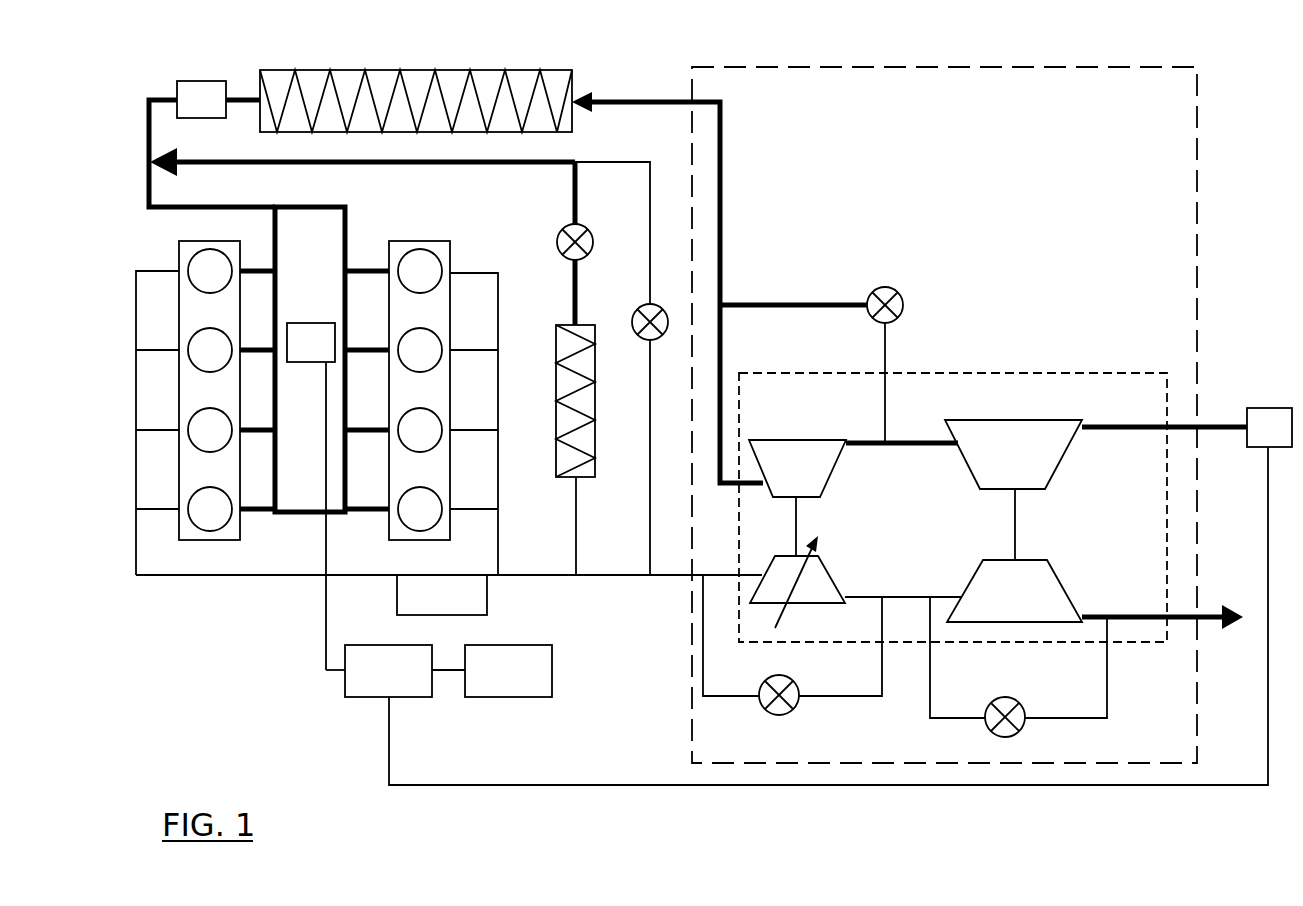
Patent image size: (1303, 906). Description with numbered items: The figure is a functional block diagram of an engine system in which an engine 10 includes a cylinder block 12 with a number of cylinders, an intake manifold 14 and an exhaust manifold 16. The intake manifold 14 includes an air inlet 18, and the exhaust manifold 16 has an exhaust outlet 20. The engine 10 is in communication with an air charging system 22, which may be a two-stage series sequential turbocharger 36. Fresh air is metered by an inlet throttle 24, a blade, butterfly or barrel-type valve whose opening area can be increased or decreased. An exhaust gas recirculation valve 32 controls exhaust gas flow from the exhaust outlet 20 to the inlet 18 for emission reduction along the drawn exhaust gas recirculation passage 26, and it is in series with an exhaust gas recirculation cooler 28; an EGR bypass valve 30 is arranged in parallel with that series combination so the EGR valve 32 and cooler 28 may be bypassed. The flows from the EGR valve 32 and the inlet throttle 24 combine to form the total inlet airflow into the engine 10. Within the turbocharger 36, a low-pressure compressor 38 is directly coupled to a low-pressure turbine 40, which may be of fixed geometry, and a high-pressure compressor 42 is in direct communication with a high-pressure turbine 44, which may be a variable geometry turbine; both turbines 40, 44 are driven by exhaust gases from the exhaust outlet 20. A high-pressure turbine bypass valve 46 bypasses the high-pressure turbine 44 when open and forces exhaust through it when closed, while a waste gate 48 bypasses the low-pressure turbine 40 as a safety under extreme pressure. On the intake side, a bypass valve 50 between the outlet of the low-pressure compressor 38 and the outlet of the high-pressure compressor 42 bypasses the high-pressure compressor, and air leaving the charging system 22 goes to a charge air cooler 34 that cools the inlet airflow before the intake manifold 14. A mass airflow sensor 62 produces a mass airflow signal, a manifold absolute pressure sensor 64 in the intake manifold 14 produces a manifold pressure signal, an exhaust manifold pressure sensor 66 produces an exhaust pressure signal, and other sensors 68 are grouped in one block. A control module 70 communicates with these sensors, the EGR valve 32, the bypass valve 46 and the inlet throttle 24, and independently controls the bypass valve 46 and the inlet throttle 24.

The engine 10 is at (166, 598).
The cylinder block 12 is at (179, 247).
The intake manifold 14 is at (325, 207).
The exhaust manifold 16 is at (136, 298).
The air inlet 18 is at (207, 207).
The exhaust outlet 20 is at (539, 576).
The air charging system 22 is at (930, 67).
The inlet throttle 24 is at (202, 81).
The EGR passage 26 is at (578, 193).
The exhaust gas recirculation cooler 28 is at (586, 477).
The EGR bypass valve 30 is at (653, 304).
The exhaust gas recirculation valve 32 is at (594, 240).
The charge air cooler 34 is at (487, 70).
The two-stage series sequential turbocharger 36 is at (1106, 373).
The low-pressure compressor 38 is at (968, 420).
The low-pressure turbine 40 is at (1036, 560).
The high-pressure compressor 42 is at (836, 460).
The high-pressure turbine 44 is at (780, 556).
The high-pressure turbine bypass valve 46 is at (790, 675).
The waste gate 48 is at (1012, 736).
The bypass valve 50 is at (903, 303).
The mass airflow sensor 62 is at (1265, 408).
The manifold absolute pressure sensor 64 is at (311, 362).
The exhaust manifold pressure sensor 66 is at (397, 594).
The other sensors 68 is at (505, 697).
The control module 70 is at (356, 697).